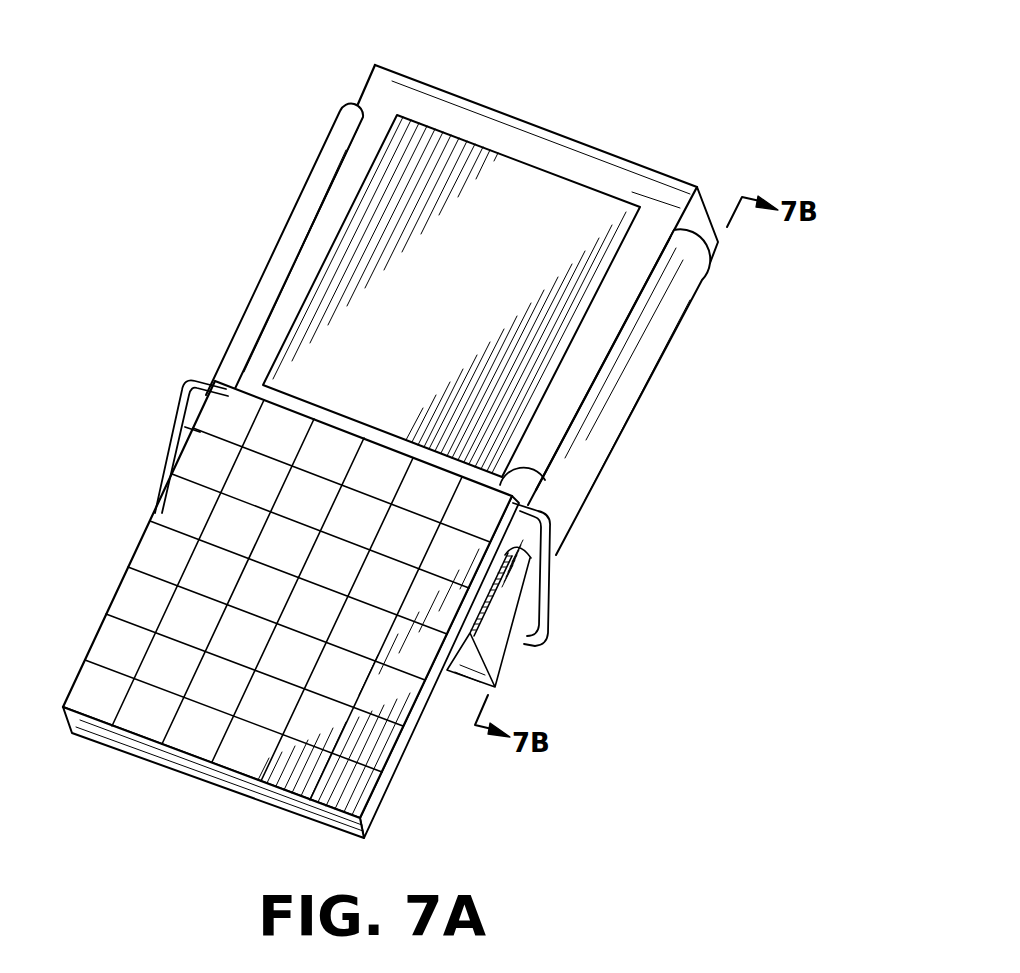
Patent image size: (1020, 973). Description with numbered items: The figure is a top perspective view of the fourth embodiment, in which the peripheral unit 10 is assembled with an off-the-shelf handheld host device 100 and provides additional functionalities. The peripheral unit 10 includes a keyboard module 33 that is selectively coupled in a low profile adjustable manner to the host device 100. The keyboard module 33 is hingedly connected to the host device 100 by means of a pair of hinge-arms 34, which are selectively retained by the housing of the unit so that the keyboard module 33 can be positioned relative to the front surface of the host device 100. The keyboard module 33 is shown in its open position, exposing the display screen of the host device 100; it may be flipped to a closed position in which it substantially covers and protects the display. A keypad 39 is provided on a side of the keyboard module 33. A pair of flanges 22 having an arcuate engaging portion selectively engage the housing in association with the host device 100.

The peripheral unit 10 is at (455, 287).
The host device 100 is at (564, 126).
The flanges 22 is at (670, 292).
The keyboard module 33 is at (545, 480).
The hinge-arms 34 is at (548, 555).
The keypad 39 is at (347, 771).